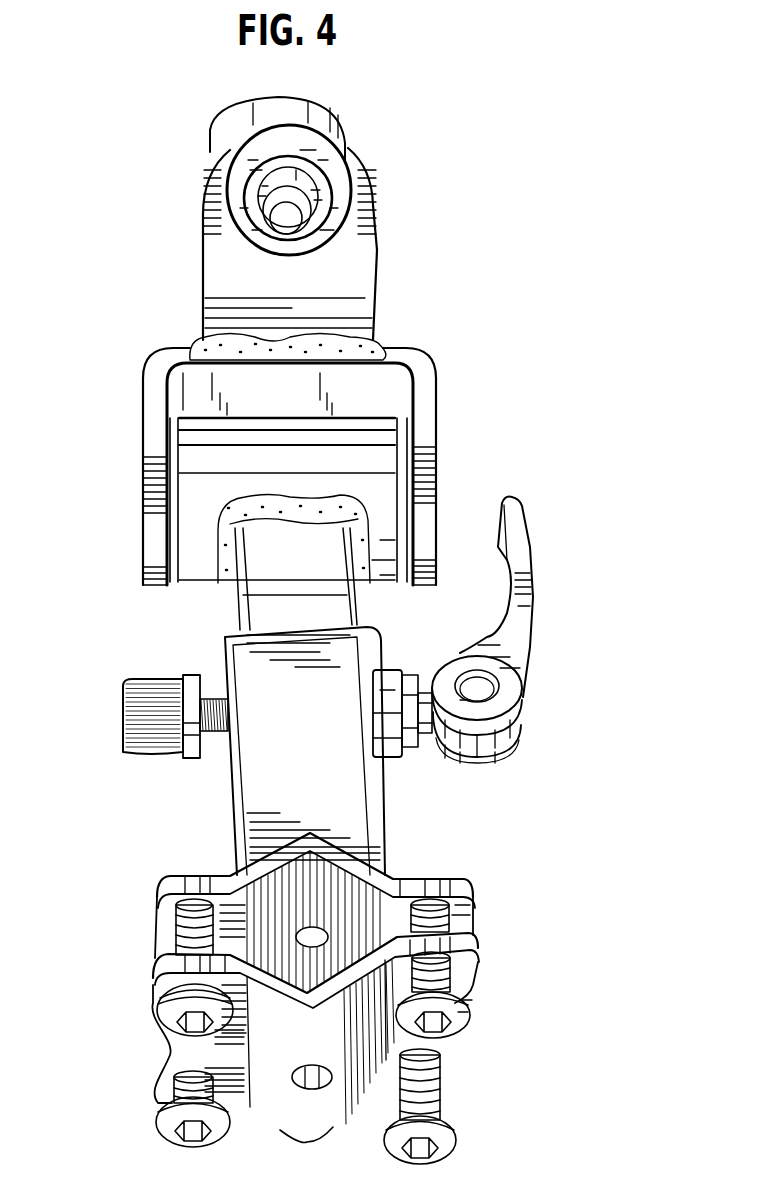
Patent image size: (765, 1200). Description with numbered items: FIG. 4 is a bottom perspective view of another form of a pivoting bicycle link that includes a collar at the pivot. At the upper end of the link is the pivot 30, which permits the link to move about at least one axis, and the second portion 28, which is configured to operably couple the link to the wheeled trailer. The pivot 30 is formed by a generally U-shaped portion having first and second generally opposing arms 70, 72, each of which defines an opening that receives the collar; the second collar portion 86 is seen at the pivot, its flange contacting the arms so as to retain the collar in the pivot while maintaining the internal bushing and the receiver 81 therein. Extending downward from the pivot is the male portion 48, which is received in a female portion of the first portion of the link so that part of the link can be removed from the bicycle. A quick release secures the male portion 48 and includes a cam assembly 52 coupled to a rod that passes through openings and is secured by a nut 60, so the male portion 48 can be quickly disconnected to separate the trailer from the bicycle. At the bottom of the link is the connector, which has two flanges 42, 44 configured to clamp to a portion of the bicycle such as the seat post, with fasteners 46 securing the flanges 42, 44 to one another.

The second portion 28 is at (506, 260).
The pivot 30 is at (487, 373).
The flange 42 is at (378, 866).
The flange 44 is at (177, 1063).
The fasteners 46 is at (230, 787).
The male portion 48 is at (233, 608).
The cam assembly 52 is at (543, 735).
The nut 60 is at (120, 712).
The first arm 70 is at (442, 435).
The second arm 72 is at (208, 266).
The receiver 81 is at (218, 504).
The second collar portion 86 is at (332, 188).